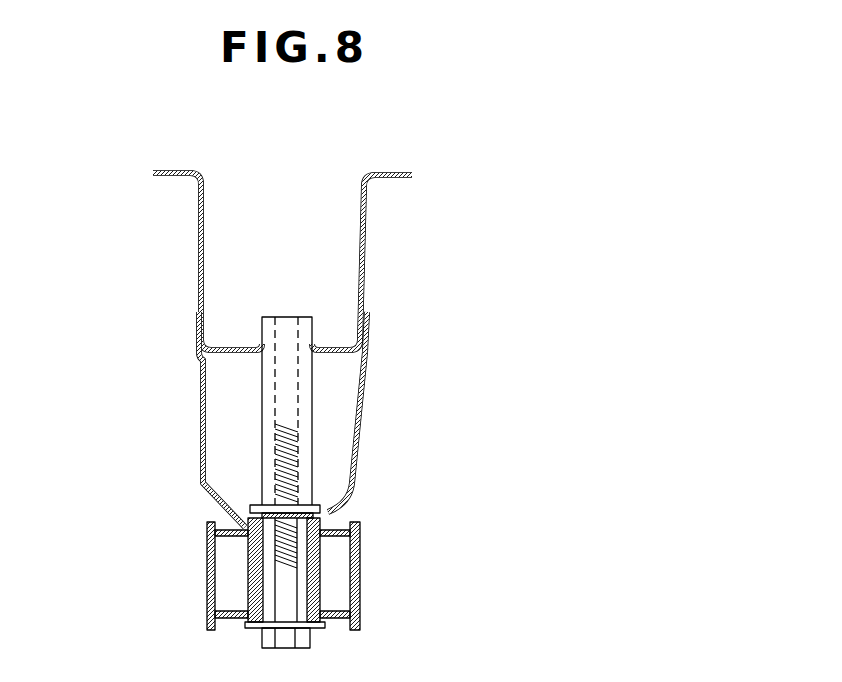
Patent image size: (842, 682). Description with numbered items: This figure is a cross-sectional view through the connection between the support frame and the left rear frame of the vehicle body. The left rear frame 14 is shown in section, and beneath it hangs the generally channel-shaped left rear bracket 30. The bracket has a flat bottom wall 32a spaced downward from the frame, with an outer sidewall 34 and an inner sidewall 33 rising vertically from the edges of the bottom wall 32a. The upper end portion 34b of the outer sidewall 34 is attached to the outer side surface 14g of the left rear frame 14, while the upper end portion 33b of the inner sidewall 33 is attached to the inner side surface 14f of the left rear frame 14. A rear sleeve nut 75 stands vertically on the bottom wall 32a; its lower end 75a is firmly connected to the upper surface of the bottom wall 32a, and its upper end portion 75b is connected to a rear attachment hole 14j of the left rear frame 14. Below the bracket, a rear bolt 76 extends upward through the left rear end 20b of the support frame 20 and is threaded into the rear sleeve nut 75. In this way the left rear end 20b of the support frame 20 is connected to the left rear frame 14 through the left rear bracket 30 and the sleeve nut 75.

The left rear frame 14 is at (291, 211).
The inner side surface 14f is at (367, 243).
The outer side surface 14g is at (197, 282).
The rear attachment hole 14j is at (310, 348).
The left rear bracket 30 is at (288, 403).
The inner sidewall 33 is at (415, 395).
The upper end portion of the inner sidewall 33b is at (367, 328).
The outer sidewall 34 is at (156, 419).
The upper end portion of the outer sidewall 34b is at (196, 328).
The rear sleeve nut 75 is at (191, 378).
The lower end of the rear sleeve nut 75a is at (267, 477).
The upper end portion of the rear sleeve nut 75b is at (260, 324).
The support frame 20 is at (357, 577).
The left rear end of the support frame 20b is at (362, 607).
The bottom wall 32a is at (240, 530).
The rear bolt 76 is at (287, 590).